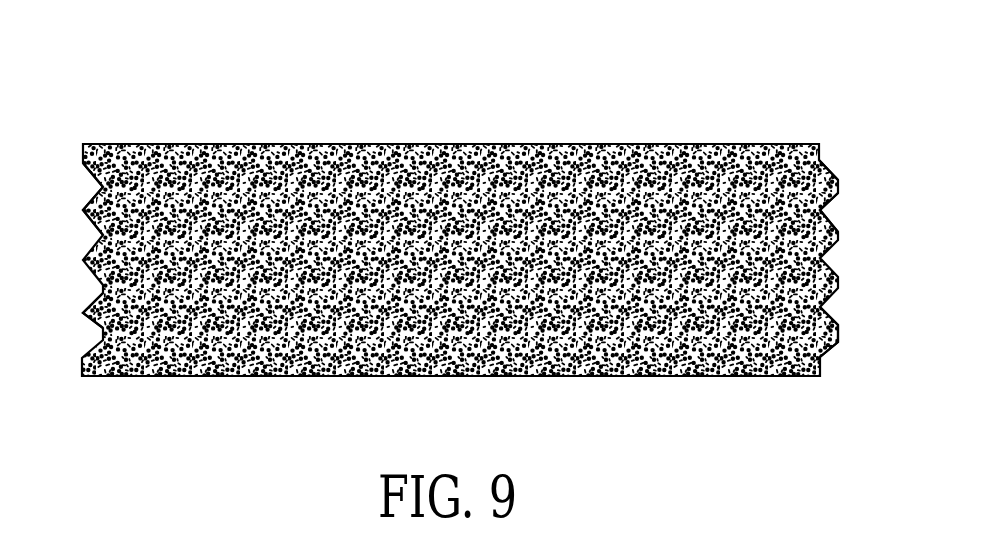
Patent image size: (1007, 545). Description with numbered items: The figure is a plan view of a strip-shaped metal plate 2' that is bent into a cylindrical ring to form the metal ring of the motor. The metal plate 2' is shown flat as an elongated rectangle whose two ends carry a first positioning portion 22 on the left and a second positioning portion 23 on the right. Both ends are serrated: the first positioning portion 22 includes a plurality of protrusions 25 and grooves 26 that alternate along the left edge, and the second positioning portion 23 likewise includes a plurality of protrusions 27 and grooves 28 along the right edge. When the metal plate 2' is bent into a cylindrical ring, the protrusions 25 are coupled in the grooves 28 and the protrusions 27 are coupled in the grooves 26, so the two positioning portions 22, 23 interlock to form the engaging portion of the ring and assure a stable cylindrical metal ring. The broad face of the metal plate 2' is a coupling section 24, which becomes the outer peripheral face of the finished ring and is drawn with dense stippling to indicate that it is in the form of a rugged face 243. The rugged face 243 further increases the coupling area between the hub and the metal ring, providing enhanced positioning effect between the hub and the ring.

The metal plate 2' is at (460, 192).
The first positioning portion 22 is at (92, 318).
The second positioning portion 23 is at (831, 346).
The coupling section 24 is at (423, 190).
The rugged face 243 is at (485, 220).
The protrusions 25 is at (83, 210).
The grooves 26 is at (102, 190).
The protrusions 27 is at (831, 173).
The grooves 28 is at (825, 211).